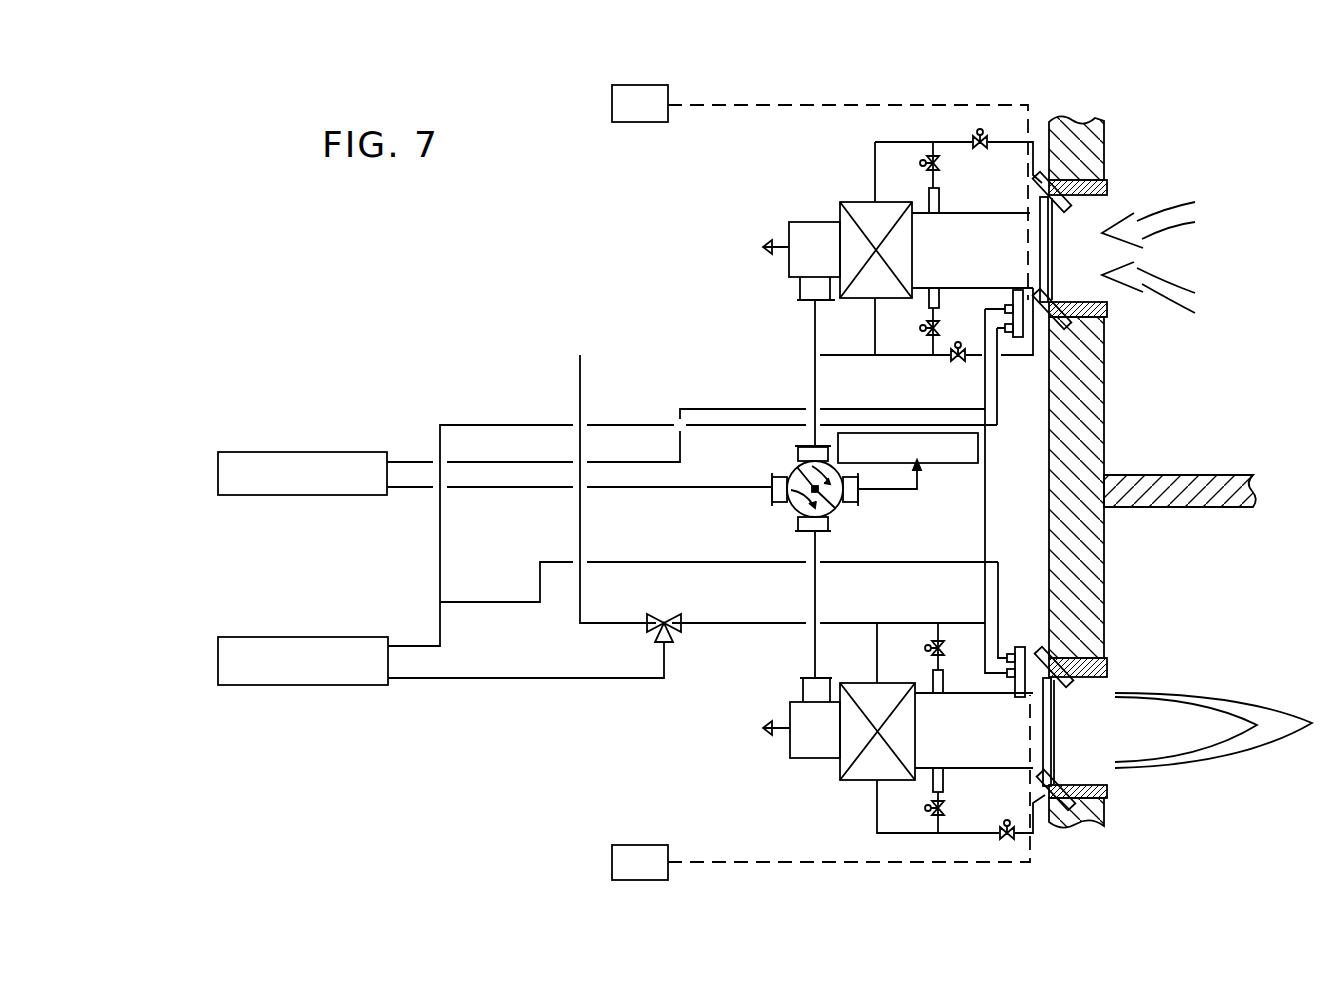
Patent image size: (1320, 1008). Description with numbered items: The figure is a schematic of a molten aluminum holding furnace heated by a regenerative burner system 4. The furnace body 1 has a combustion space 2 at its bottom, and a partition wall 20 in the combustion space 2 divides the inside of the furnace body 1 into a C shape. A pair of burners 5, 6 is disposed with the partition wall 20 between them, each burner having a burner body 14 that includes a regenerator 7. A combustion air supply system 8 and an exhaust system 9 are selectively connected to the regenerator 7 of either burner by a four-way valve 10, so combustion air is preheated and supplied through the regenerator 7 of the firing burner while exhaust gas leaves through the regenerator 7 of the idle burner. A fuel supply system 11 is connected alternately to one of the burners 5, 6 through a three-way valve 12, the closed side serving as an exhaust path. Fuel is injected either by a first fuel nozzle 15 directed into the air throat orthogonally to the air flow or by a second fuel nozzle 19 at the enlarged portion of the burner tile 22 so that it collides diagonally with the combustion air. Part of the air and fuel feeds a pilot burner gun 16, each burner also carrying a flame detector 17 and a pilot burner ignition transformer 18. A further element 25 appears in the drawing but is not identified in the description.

The furnace body 1 is at (1100, 400).
The combustion space 2 is at (1197, 571).
The regenerative burner system 4 is at (460, 736).
The burner 5 is at (808, 774).
The burner 6 is at (804, 188).
The regenerator 7 is at (864, 204).
The combustion air supply system 8 is at (408, 468).
The exhaust system 9 is at (896, 489).
The four-way valve 10 is at (838, 508).
The fuel supply system 11 is at (406, 650).
The three-way valve 12 is at (671, 644).
The burner body 14 is at (994, 212).
The first fuel nozzle 15 is at (935, 188).
The pilot burner gun 16 is at (1025, 338).
The flame detector 17 is at (780, 236).
The pilot burner ignition transformer 18 is at (612, 103).
The second fuel nozzle 19 is at (1052, 180).
The partition wall 20 is at (1196, 475).
The burner tile 22 is at (1100, 190).
The combustion chamber 25 is at (1098, 264).